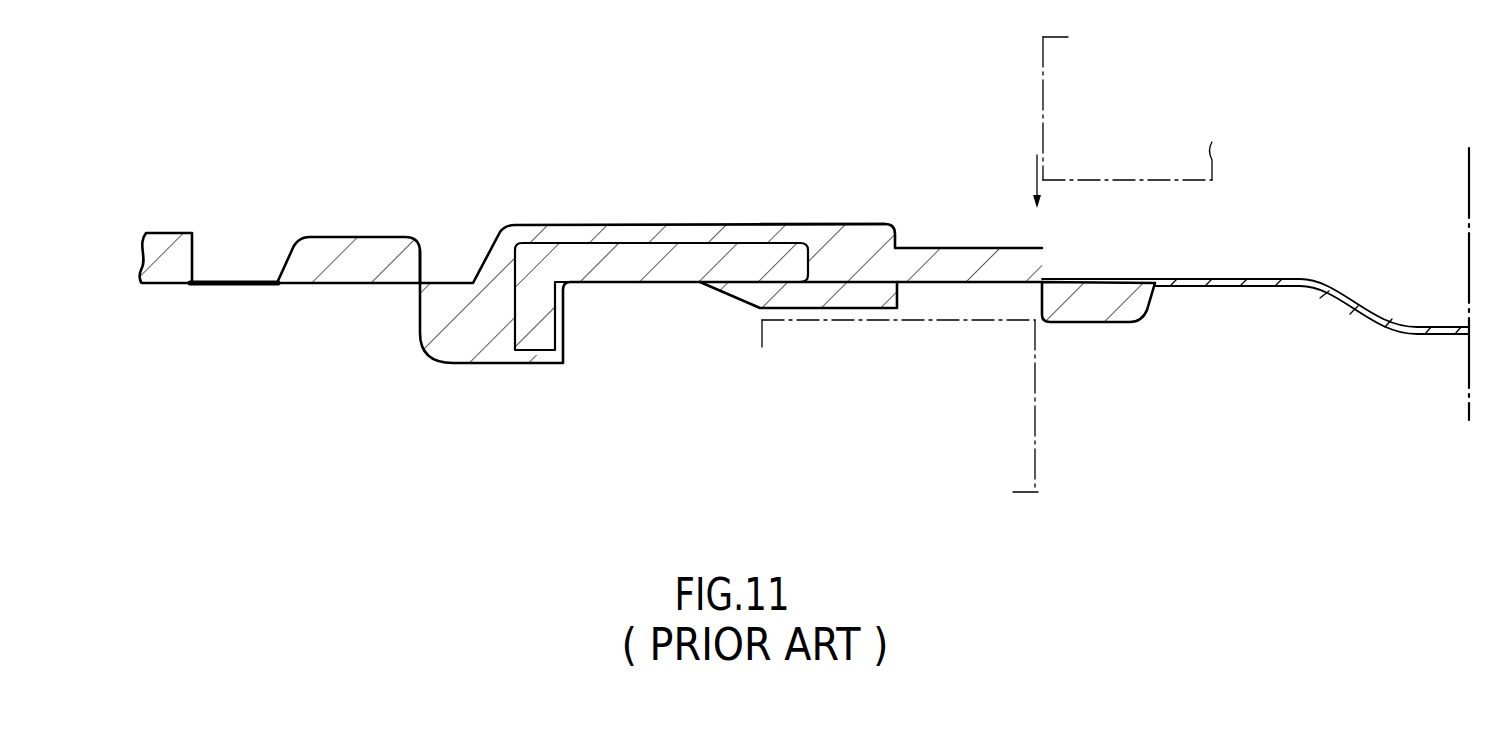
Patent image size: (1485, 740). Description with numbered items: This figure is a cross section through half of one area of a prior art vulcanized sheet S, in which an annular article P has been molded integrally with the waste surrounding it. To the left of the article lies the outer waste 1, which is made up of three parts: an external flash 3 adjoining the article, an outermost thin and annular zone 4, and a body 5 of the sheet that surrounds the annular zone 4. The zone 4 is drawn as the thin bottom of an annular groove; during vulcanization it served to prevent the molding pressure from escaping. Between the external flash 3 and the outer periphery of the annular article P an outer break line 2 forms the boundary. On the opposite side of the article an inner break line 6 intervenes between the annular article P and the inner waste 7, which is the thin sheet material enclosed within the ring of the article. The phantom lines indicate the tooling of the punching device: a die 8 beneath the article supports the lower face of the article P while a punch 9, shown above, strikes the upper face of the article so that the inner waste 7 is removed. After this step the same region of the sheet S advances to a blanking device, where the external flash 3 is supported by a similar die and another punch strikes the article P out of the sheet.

The outer waste 1 is at (280, 180).
The outer break line 2 is at (413, 288).
The external flash 3 is at (348, 209).
The outermost thin and annular zone 4 is at (240, 282).
The body of the sheet 5 is at (183, 233).
The inner break line 6 is at (1046, 278).
The inner waste 7 is at (1210, 279).
The die 8 is at (979, 320).
The punch 9 is at (1103, 180).
The annular article P is at (678, 224).
The vulcanized sheet S is at (823, 206).